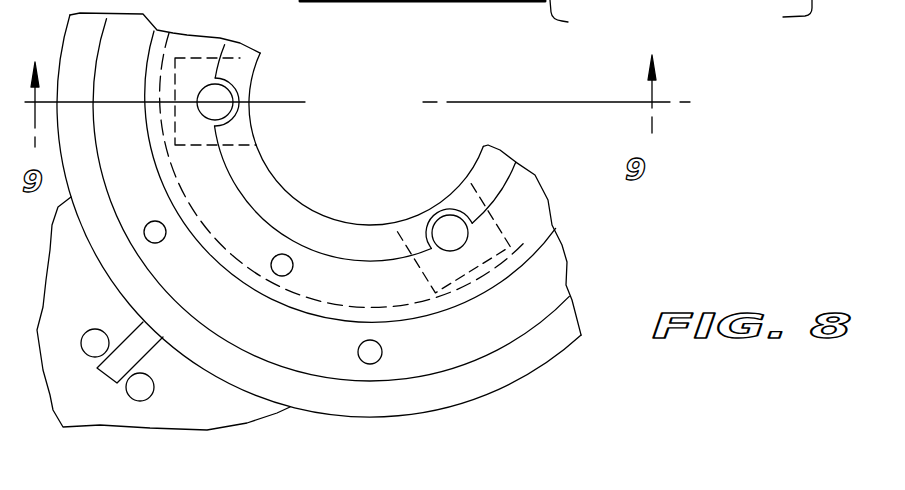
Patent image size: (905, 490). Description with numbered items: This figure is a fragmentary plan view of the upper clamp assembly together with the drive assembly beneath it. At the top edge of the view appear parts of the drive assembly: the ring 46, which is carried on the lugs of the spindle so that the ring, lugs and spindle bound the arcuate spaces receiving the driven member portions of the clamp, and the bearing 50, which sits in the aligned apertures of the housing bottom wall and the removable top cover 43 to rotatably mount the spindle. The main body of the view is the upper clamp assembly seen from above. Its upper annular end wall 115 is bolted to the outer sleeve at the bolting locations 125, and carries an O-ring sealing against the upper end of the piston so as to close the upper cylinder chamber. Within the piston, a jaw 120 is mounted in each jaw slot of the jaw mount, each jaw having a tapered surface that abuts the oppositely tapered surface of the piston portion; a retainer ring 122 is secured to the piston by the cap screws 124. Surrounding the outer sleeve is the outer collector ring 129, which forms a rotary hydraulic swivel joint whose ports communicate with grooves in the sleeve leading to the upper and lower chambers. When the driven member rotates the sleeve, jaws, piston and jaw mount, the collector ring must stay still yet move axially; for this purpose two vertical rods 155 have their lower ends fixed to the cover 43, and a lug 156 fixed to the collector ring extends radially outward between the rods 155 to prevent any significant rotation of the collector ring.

The removable top cover 43 is at (70, 240).
The upper annular end wall 115 is at (543, 277).
The jaw 120 is at (238, 60).
The retainer ring 122 is at (213, 187).
The cap screw 124 is at (291, 267).
The bolting location 125 is at (167, 235).
The outer collector ring 129 is at (203, 353).
The vertical rods 155 is at (137, 388).
The lug 156 is at (127, 342).
The ring 46 is at (579, 18).
The bearing 50 is at (780, 15).